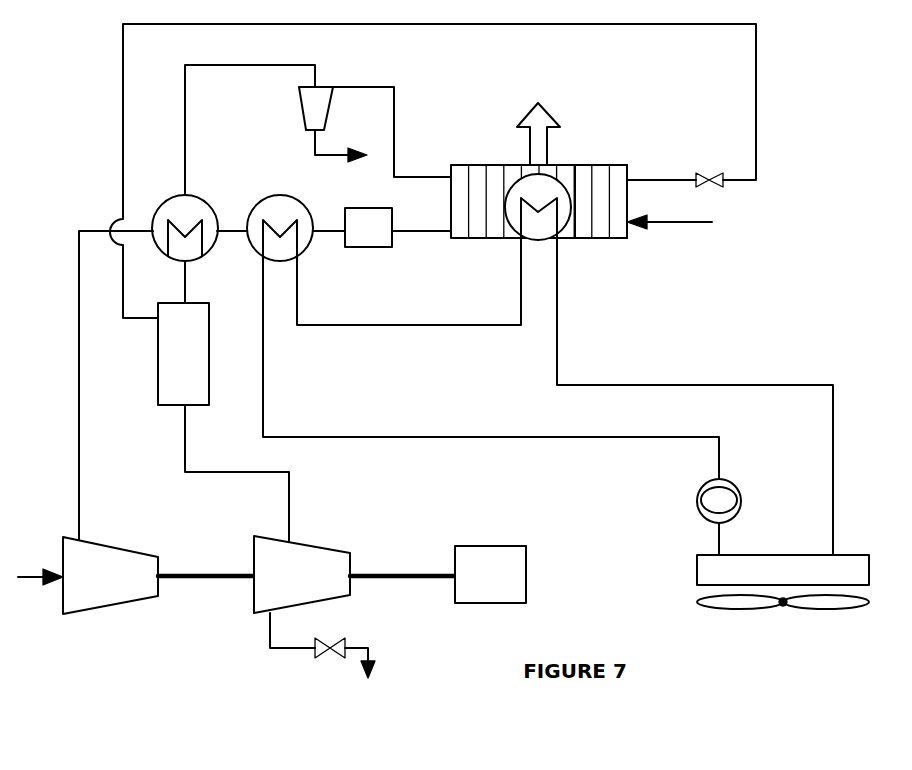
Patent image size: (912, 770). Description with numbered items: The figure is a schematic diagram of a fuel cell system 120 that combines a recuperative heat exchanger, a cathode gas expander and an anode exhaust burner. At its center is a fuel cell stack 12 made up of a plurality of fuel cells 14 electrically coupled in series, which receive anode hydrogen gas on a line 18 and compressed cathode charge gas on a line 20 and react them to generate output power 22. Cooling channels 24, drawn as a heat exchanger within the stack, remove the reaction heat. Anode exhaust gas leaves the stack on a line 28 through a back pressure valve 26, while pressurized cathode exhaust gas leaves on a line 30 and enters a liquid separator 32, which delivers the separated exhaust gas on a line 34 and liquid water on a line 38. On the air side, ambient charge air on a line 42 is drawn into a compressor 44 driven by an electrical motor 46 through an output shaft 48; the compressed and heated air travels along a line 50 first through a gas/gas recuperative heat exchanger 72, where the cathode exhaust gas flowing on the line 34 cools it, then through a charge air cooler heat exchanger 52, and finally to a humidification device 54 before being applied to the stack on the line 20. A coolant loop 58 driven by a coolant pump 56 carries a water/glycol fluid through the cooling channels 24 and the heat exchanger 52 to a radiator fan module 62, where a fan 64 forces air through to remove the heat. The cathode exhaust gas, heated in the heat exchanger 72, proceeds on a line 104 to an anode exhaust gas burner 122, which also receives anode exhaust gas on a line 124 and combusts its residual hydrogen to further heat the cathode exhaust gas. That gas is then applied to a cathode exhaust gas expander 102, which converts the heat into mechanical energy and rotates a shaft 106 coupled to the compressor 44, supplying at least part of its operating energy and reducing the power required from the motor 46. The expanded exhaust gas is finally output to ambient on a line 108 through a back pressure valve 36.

The fuel cell stack 12 is at (480, 165).
The fuel cells 14 is at (617, 176).
The anode hydrogen gas line 18 is at (697, 225).
The cathode charge gas line 20 is at (415, 232).
The output power 22 is at (530, 110).
The cooling channels 24 is at (570, 238).
The back pressure valve 26 is at (716, 186).
The anode exhaust gas line 28 is at (660, 180).
The cathode exhaust gas line 30 is at (394, 112).
The liquid separator 32 is at (334, 88).
The separated exhaust gas line 34 is at (185, 108).
The back pressure valve 36 is at (333, 655).
The liquid water line 38 is at (315, 155).
The ambient charge air line 42 is at (27, 577).
The compressor 44 is at (110, 607).
The electrical motor 46 is at (503, 546).
The output shaft 48 is at (415, 575).
The charge air line 50 is at (79, 405).
The charge air cooler heat exchanger 52 is at (281, 195).
The humidification device 54 is at (350, 247).
The coolant pump 56 is at (697, 500).
The coolant loop 58 is at (627, 385).
The radiator fan module 62 is at (772, 555).
The fan 64 is at (697, 602).
The gas/gas recuperative heat exchanger 72 is at (176, 201).
The cathode exhaust gas expander 102 is at (325, 545).
The heated cathode exhaust gas line 104 is at (253, 473).
The shaft 106 is at (190, 577).
The expanded exhaust gas line 108 is at (270, 648).
The fuel cell system 120 is at (768, 333).
The anode exhaust gas burner 122 is at (158, 385).
The anode exhaust gas line 124 is at (757, 113).